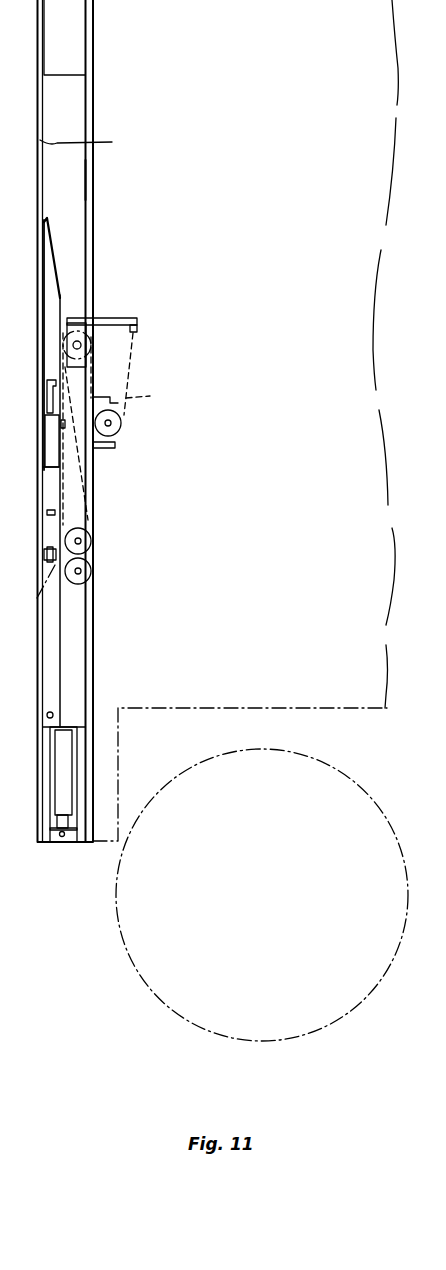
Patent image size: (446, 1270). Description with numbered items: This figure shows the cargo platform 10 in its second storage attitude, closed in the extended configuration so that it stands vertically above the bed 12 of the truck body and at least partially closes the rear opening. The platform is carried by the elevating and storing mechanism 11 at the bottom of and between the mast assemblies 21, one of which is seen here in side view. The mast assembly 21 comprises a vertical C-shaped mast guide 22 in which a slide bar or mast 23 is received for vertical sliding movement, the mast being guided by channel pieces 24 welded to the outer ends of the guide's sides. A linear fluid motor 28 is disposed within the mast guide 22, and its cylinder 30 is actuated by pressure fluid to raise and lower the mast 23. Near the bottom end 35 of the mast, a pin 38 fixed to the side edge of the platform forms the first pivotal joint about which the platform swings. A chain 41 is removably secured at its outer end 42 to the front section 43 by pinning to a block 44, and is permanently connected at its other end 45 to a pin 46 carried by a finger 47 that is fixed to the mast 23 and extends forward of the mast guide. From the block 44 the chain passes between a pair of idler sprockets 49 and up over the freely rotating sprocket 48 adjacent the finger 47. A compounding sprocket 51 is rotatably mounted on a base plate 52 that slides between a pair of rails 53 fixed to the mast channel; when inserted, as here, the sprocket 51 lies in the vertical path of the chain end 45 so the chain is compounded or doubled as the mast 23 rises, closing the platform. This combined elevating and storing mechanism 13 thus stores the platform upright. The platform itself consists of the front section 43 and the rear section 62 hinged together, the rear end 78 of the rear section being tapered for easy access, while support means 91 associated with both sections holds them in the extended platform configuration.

The cargo platform 10 is at (50, 634).
The elevating and storing mechanism 11 is at (103, 505).
The bed 12 is at (303, 705).
The combined elevating and storing mechanism 13 is at (398, 68).
The mast assembly 21 is at (93, 124).
The mast guide 22 is at (75, 52).
The mast 23 is at (75, 173).
The channel pieces 24 is at (88, 145).
The linear fluid motor 28 is at (63, 784).
The cylinder 30 is at (65, 753).
The bottom end 35 is at (75, 708).
The pin 38 is at (50, 711).
The chain 41 is at (150, 396).
The outer end 42 is at (31, 593).
The front section 43 is at (62, 610).
The block 44 is at (44, 555).
The other end 45 is at (138, 337).
The pin 46 is at (137, 330).
The finger 47 is at (110, 318).
The sprocket 48 is at (67, 343).
The idler sprockets 49 is at (84, 566).
The compounding sprocket 51 is at (121, 424).
The base plate 52 is at (112, 448).
The rails 53 is at (97, 397).
The rear section 62 is at (53, 326).
The rear end 78 is at (57, 265).
The support means 91 is at (50, 428).